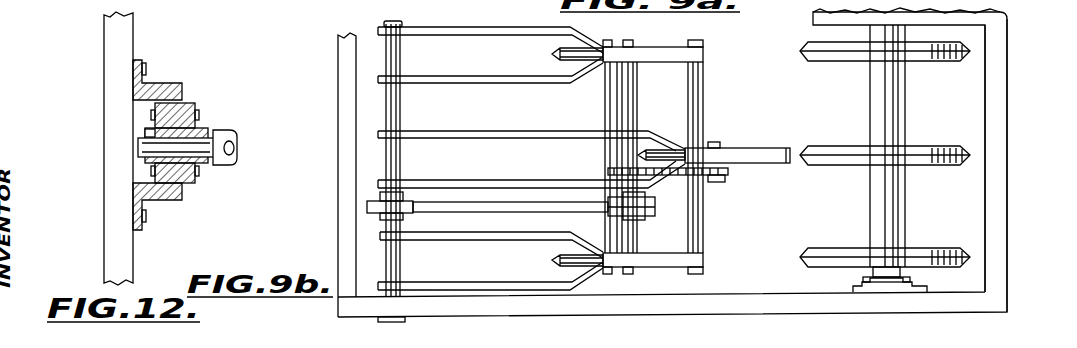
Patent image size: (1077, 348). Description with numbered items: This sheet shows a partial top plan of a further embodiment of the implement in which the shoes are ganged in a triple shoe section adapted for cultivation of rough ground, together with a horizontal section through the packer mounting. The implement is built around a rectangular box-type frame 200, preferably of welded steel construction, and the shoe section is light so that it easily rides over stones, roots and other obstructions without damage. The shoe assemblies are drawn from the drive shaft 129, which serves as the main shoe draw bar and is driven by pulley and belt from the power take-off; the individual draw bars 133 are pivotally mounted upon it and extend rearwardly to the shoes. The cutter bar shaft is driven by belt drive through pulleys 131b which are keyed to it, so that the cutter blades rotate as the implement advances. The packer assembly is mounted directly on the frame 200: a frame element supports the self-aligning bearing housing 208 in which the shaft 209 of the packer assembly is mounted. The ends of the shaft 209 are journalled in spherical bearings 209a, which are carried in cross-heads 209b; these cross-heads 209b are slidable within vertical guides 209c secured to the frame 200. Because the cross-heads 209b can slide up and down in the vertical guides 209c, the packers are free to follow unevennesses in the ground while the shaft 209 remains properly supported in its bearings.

In FIG. 9b, the drive shaft 129 is at (397, 116).
In FIG. 9b, the pulleys 131b is at (401, 218).
In FIG. 9b, the individual draw bars 133 is at (433, 37).
In FIG. 9b, the rectangular box-type frame 200 is at (1003, 164).
In FIG. 9b, the self-aligning bearing housing 208 is at (903, 30).
In FIG. 12, the shaft 209 is at (138, 148).
In FIG. 12, the spherical bearings 209a is at (145, 133).
In FIG. 12, the cross-heads 209b is at (195, 112).
In FIG. 12, the vertical guides 209c is at (160, 87).